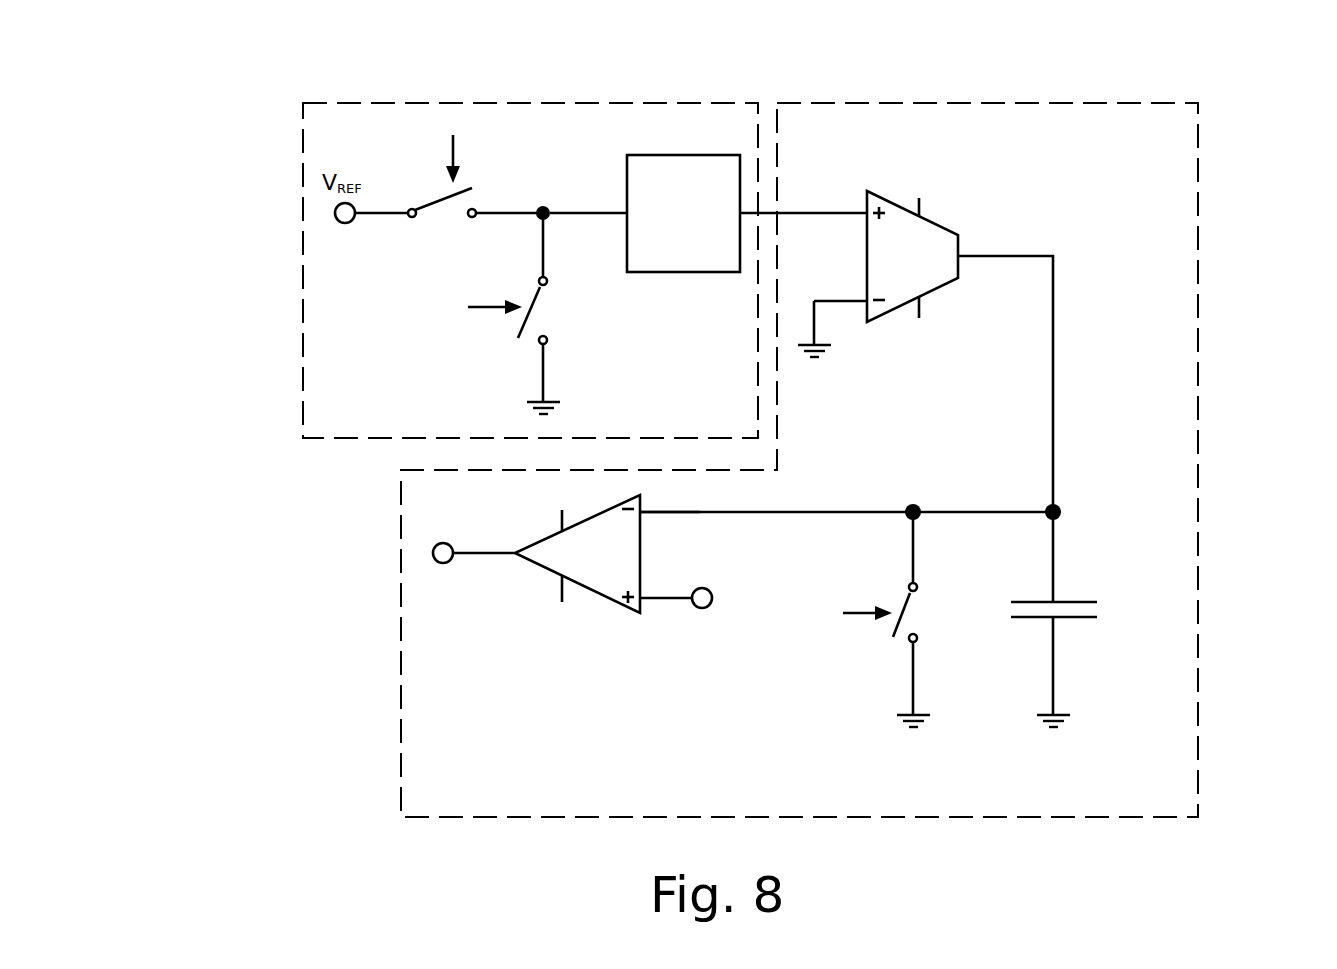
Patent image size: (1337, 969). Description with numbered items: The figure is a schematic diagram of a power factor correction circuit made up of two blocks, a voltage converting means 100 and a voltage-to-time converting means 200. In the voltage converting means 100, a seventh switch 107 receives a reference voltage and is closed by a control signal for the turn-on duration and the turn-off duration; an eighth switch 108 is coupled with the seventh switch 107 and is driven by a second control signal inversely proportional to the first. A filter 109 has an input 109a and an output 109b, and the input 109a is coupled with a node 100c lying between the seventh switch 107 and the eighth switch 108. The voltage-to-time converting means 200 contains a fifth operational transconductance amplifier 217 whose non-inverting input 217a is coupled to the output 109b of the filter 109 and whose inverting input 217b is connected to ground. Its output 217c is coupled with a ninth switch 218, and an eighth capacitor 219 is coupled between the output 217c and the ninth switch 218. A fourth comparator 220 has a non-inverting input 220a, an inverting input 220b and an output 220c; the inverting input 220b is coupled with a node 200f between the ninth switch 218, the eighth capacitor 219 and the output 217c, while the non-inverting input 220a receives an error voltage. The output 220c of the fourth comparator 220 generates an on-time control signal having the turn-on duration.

The voltage converting means 100 is at (300, 227).
The seventh switch 107 is at (430, 201).
The eighth switch 108 is at (532, 306).
The node 100c is at (537, 205).
The filter 109 is at (683, 213).
The input 109a is at (625, 213).
The output 109b is at (742, 213).
The voltage-to-time converting means 200 is at (1202, 326).
The fifth operational transconductance amplifier 217 is at (912, 256).
The non-inverting input 217a is at (865, 213).
The inverting input 217b is at (867, 304).
The output 217c is at (960, 243).
The node 200f is at (1060, 507).
The ninth switch 218 is at (905, 606).
The eighth capacitor 219 is at (1080, 600).
The fourth comparator 220 is at (577, 554).
The non-inverting input 220a is at (642, 602).
The inverting input 220b is at (642, 514).
The output 220c is at (450, 561).